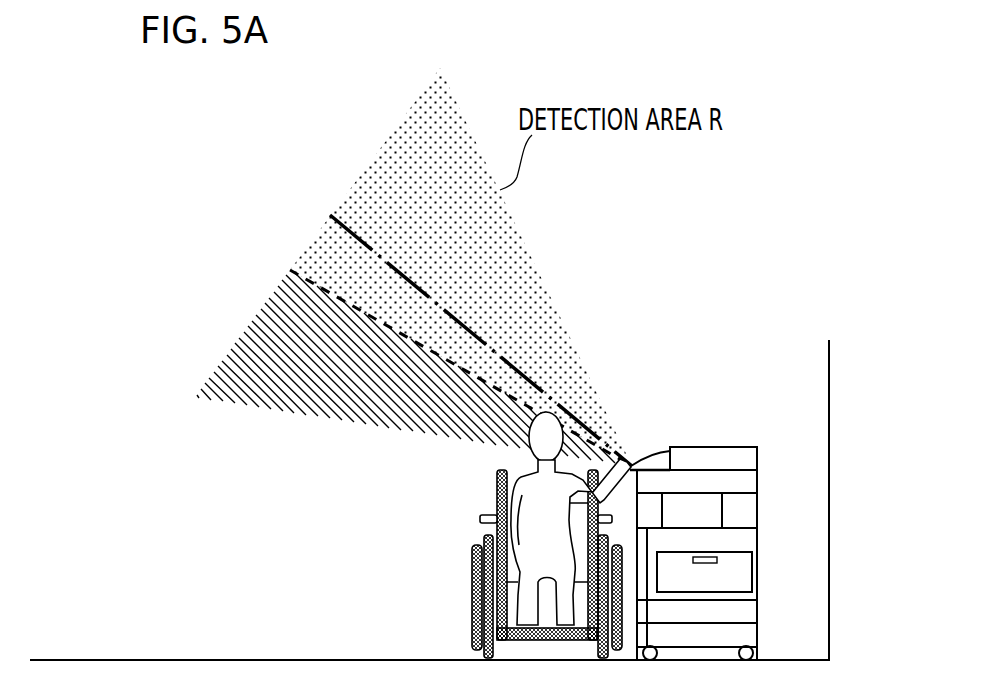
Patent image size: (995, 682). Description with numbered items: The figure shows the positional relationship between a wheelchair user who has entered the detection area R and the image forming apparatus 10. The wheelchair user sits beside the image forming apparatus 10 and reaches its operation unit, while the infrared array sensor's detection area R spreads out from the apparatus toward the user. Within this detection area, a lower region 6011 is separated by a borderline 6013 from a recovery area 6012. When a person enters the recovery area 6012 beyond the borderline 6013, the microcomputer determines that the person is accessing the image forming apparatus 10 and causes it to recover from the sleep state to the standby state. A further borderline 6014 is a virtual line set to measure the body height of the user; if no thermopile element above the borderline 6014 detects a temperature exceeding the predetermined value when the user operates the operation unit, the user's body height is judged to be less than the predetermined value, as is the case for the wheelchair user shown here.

The image forming apparatus 10 is at (708, 452).
The first detection area (hatched region) 6011 is at (253, 330).
The recovery area 6012 is at (410, 133).
The borderline 6013 is at (316, 260).
The borderline 6014 is at (357, 236).